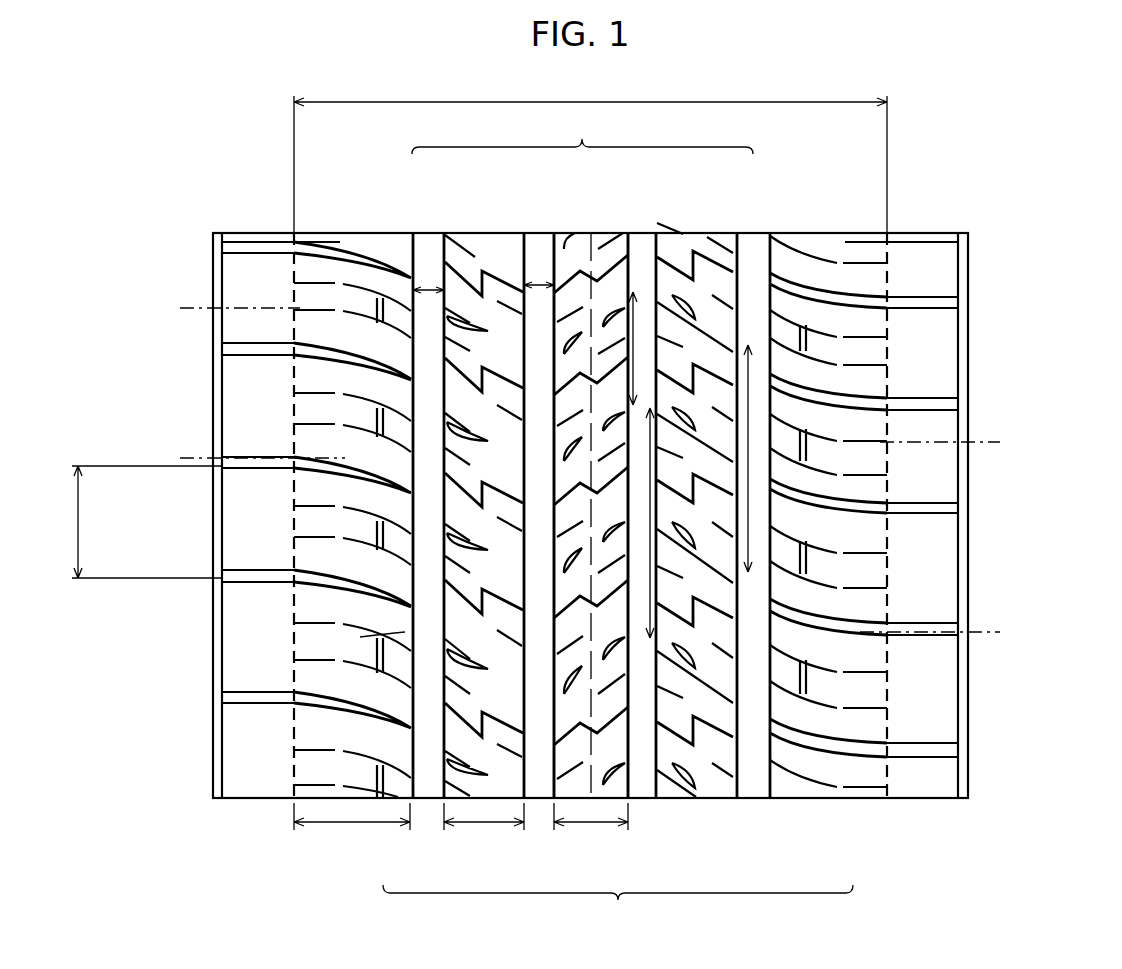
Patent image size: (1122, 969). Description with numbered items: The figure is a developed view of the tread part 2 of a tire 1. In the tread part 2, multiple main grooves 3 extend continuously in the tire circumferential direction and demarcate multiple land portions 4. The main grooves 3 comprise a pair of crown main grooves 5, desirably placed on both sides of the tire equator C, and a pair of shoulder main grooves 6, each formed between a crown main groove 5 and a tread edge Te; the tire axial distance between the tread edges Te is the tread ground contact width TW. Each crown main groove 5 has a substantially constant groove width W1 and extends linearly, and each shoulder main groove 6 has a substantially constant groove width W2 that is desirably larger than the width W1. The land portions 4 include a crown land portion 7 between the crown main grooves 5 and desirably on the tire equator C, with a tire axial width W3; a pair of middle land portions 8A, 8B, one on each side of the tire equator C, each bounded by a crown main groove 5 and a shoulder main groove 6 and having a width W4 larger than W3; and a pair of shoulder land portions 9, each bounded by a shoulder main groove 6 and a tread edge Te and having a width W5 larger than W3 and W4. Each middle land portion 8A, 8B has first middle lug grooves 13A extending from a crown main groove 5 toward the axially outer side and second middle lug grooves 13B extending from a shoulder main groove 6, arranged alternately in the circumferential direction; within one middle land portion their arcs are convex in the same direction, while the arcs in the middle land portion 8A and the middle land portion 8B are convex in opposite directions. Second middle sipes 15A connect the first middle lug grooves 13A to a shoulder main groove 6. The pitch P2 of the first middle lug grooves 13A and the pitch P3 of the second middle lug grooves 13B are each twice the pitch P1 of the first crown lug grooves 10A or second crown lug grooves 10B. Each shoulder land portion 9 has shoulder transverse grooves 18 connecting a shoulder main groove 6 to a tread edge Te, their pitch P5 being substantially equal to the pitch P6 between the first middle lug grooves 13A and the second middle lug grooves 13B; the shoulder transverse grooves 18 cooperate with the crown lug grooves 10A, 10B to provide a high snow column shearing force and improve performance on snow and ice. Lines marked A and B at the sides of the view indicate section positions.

The tire 1 is at (956, 162).
The tread part 2 is at (777, 158).
The main grooves 3 is at (582, 131).
The land portions 4 is at (618, 910).
The crown main groove 5 is at (690, 233).
The shoulder main groove 6 is at (756, 233).
The crown land portion 7 is at (551, 798).
The middle land portion 8A is at (532, 705).
The middle land portion 8B is at (660, 656).
The shoulder land portion 9 is at (745, 585).
The first crown lug groove 10A is at (557, 638).
The second crown lug groove 10B is at (630, 590).
The first middle lug groove 13A is at (790, 650).
The second middle lug groove 13B is at (735, 700).
The second middle sipe 15A is at (380, 408).
The shoulder transverse groove 18 is at (850, 632).
The tread edge Te is at (889, 262).
The tire equator C is at (590, 500).
The tread ground contact width TW is at (590, 87).
The groove width of crown main groove W1 is at (532, 283).
The groove width of shoulder main groove W2 is at (425, 288).
The width of crown land portion W3 is at (591, 830).
The width of middle land portion W4 is at (484, 830).
The width of shoulder land portion W5 is at (352, 830).
The pitch of crown lug grooves P1 is at (638, 293).
The pitch of first middle lug grooves P2 is at (652, 645).
The pitch of second middle lug grooves P3 is at (762, 498).
The pitch of shoulder transverse grooves P5 is at (130, 522).
The pitch between first and second middle lug grooves P6 is at (360, 637).
The section line A- A is at (994, 604).
The section line B- B is at (994, 426).